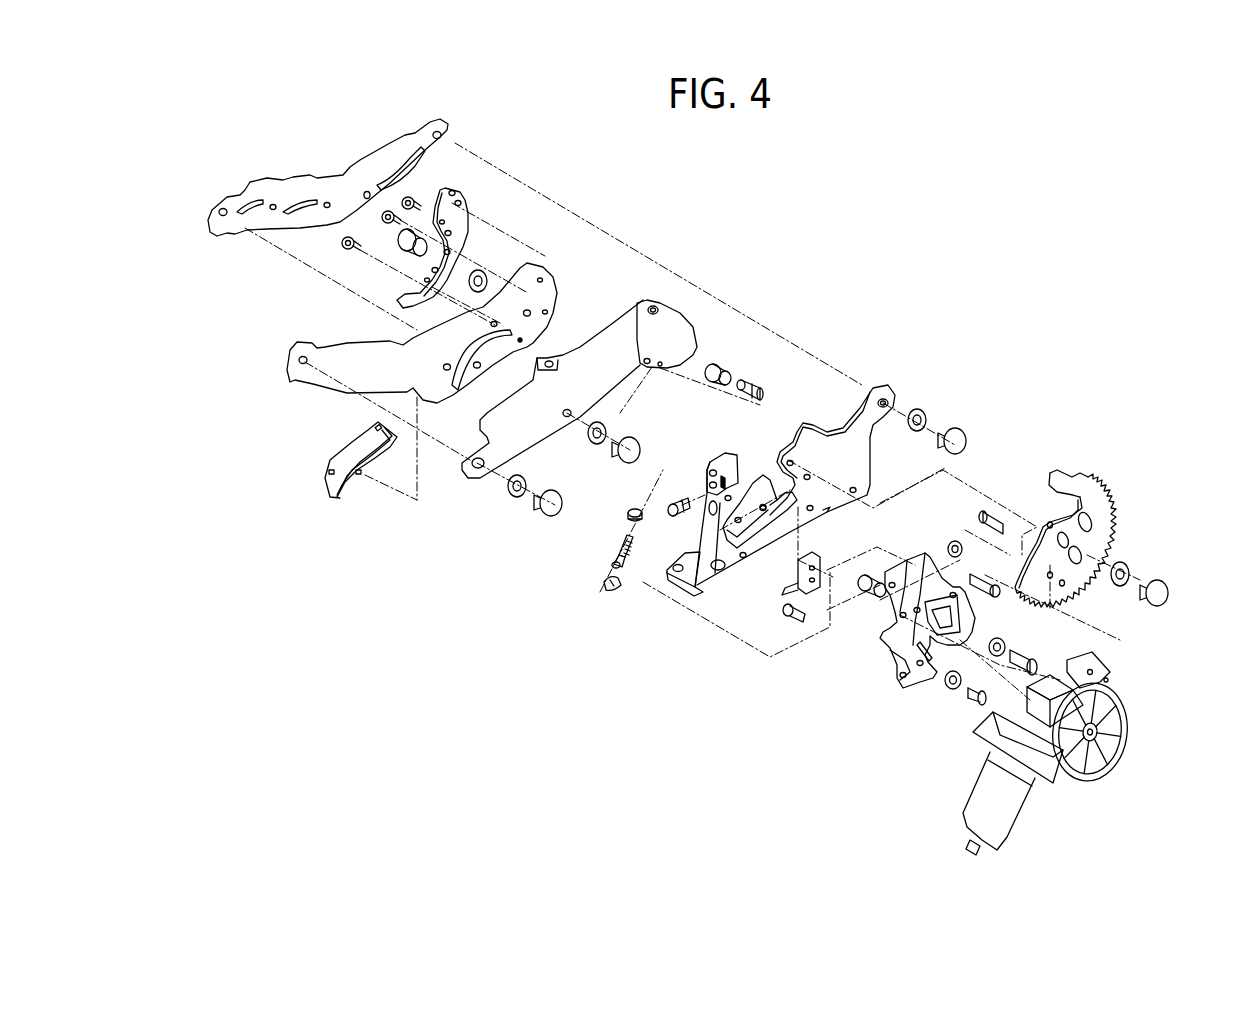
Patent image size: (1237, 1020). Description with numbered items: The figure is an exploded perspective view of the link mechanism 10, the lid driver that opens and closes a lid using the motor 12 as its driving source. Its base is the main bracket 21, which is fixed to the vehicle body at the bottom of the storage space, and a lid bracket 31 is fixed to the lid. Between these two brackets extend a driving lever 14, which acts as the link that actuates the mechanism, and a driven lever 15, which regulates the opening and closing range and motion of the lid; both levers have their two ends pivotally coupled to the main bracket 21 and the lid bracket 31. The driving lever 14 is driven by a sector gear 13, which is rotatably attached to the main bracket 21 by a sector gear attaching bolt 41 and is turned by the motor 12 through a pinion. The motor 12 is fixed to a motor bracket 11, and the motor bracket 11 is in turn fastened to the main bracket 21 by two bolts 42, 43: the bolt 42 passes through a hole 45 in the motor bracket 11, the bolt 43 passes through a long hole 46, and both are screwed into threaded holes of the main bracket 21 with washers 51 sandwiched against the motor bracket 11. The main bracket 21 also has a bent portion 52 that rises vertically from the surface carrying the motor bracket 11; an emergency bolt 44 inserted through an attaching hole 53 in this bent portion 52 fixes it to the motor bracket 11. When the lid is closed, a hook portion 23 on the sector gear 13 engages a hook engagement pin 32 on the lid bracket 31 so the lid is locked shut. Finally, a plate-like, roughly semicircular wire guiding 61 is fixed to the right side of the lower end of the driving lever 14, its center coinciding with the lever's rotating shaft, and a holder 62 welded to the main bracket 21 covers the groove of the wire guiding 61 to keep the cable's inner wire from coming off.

The link mechanism 10 is at (194, 136).
The motor bracket 11 is at (883, 665).
The motor 12 is at (1015, 818).
The sector gear 13 is at (1113, 507).
The driving lever 14 is at (337, 342).
The driven lever 15 is at (276, 178).
The main bracket 21 is at (713, 597).
The hook portion 23 is at (1063, 470).
The lid bracket 31 is at (620, 330).
The hook engagement pin 32 is at (745, 380).
The sector gear attaching bolt 41 is at (1170, 590).
The bolt 42 is at (1045, 665).
The bolt 43 is at (968, 705).
The emergency bolt 44 is at (682, 502).
The hole 45 is at (925, 560).
The long hole 46 is at (910, 665).
The washer 51 is at (950, 690).
The bent portion 52 is at (737, 480).
The attaching hole 53 is at (710, 477).
The wire guiding 61 is at (470, 207).
The holder 62 is at (780, 590).